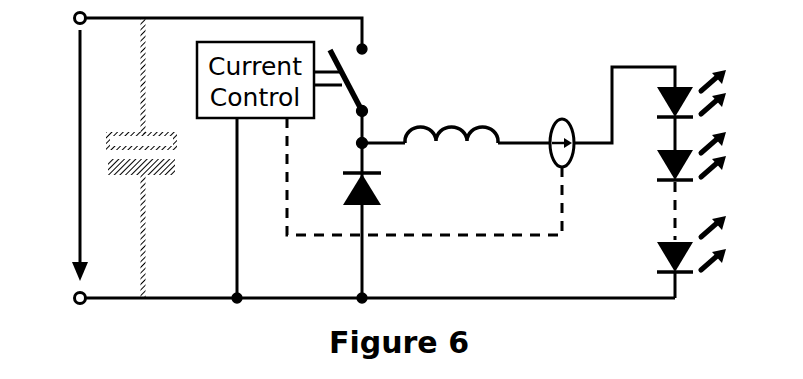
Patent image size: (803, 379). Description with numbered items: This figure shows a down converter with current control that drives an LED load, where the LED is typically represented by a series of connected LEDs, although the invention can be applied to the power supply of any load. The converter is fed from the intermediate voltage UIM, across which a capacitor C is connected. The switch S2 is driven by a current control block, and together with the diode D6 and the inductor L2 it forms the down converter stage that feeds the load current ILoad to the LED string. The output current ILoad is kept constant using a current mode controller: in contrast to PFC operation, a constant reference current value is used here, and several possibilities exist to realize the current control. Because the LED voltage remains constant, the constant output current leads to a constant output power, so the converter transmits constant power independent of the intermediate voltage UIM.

The intermediate voltage UIM is at (45, 155).
The capacitor C is at (156, 158).
The switch S2 is at (367, 174).
The diode D6 is at (391, 197).
The inductor L2 is at (430, 110).
The load current ILoad is at (586, 117).
The LED load LED is at (714, 184).